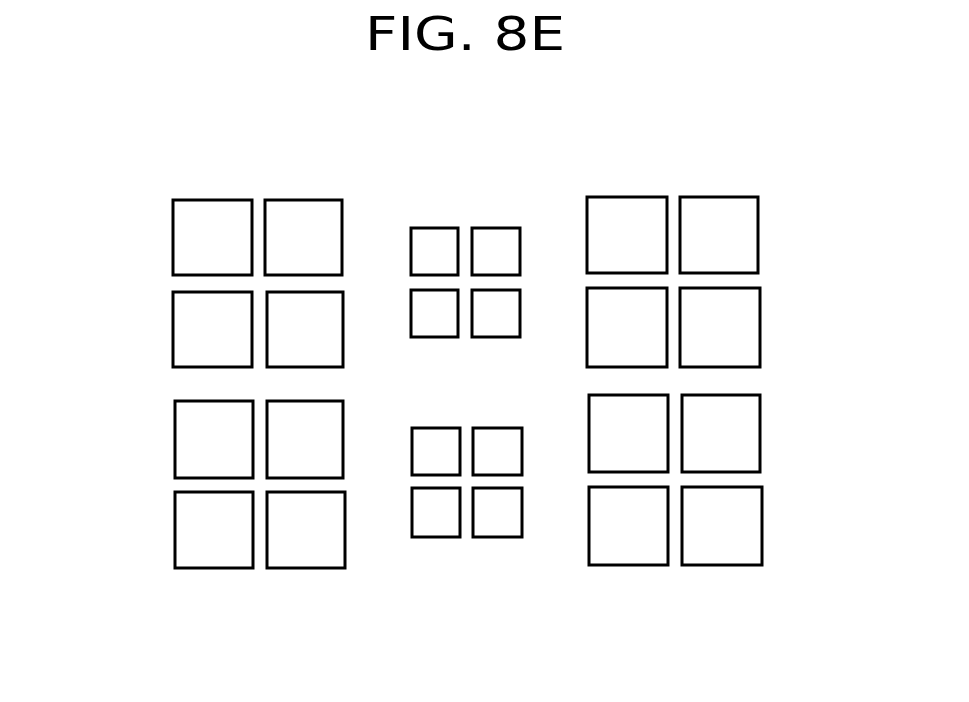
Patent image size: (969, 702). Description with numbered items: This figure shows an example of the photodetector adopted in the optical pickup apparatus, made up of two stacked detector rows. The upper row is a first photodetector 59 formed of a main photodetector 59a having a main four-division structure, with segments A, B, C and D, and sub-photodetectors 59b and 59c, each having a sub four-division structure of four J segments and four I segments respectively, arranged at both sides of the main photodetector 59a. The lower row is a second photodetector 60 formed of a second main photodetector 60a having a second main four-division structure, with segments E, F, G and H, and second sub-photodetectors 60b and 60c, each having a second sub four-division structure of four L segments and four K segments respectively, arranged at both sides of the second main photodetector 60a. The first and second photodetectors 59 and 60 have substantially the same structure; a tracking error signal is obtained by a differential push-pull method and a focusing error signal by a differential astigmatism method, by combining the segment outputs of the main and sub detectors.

The first photodetector 59 is at (158, 284).
The main photodetector 59a is at (466, 182).
The sub-photodetector 59b is at (258, 182).
The sub-photodetector 59c is at (675, 179).
The second photodetector 60 is at (159, 484).
The second main photodetector 60a is at (470, 585).
The second sub-photodetector 60b is at (263, 588).
The second sub-photodetector 60c is at (677, 582).